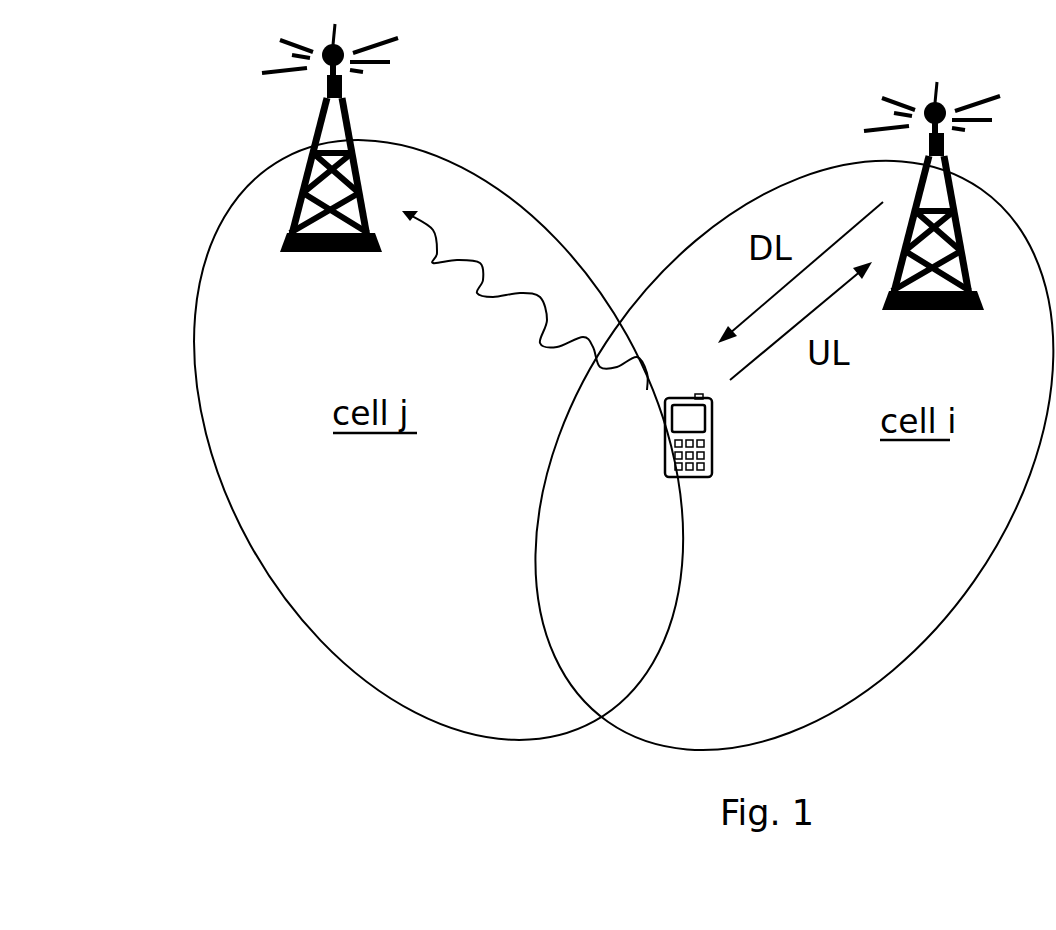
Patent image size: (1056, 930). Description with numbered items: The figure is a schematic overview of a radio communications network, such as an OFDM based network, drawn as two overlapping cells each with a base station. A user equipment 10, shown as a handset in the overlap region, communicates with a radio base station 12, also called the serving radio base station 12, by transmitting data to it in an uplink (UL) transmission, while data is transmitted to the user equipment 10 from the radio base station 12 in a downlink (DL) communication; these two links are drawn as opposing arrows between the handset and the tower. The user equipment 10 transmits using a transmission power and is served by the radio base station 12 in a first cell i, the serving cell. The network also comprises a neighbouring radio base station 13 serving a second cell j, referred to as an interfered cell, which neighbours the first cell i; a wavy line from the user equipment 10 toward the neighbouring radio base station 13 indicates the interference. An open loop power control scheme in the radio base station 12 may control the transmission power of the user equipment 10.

The user equipment 10 is at (673, 437).
The radio base station 12 is at (958, 212).
The neighbouring radio base station 13 is at (314, 148).